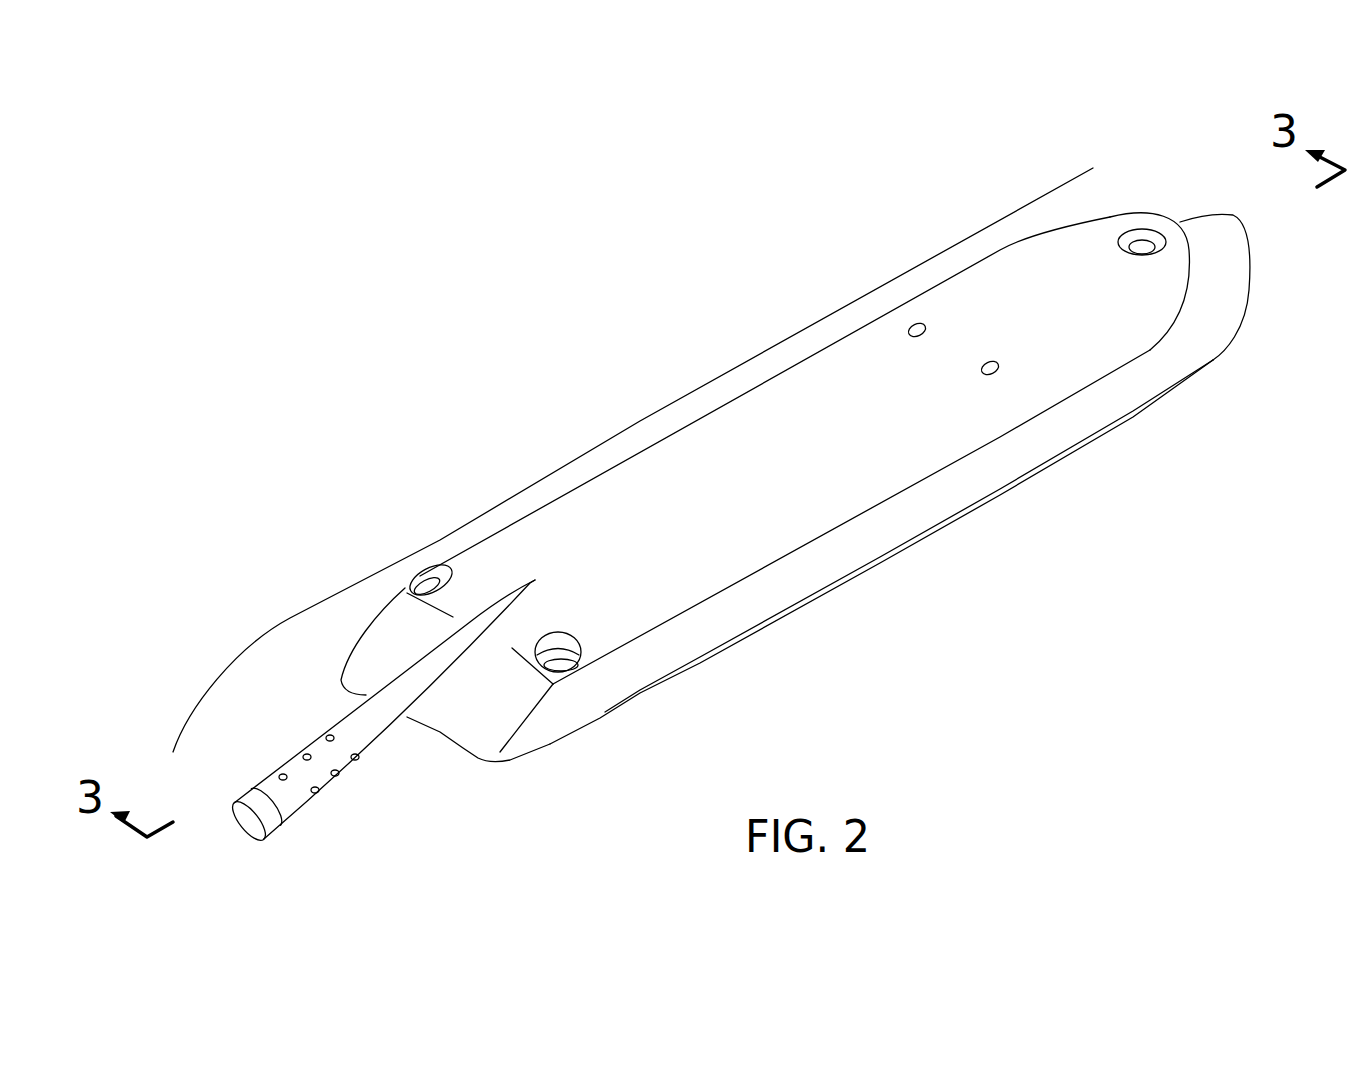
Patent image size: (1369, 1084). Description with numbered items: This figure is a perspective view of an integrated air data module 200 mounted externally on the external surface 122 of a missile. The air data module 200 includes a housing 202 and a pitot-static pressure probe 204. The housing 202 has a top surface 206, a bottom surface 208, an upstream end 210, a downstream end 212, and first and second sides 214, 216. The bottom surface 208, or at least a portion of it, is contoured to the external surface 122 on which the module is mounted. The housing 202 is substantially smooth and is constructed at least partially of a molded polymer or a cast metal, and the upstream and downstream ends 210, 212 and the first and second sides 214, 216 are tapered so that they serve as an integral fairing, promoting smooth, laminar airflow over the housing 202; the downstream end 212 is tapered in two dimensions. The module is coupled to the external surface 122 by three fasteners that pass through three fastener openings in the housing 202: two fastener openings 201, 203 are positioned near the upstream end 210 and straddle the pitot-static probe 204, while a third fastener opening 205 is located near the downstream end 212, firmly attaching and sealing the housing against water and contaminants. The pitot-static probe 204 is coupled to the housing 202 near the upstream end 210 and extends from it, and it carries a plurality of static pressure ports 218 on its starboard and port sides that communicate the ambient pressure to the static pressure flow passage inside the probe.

The external surface 122 is at (348, 602).
The air data module 200 is at (695, 403).
The fastener opening 201 is at (433, 580).
The housing 202 is at (860, 350).
The fastener opening 203 is at (560, 664).
The pitot-static pressure probe 204 is at (350, 712).
The fastener opening 205 is at (1141, 243).
The top surface 206 is at (793, 489).
The bottom surface 208 is at (775, 620).
The upstream end 210 is at (470, 738).
The downstream end 212 is at (1228, 228).
The first side 214 is at (898, 528).
The second side 216 is at (762, 380).
The static pressure ports 218 is at (330, 738).